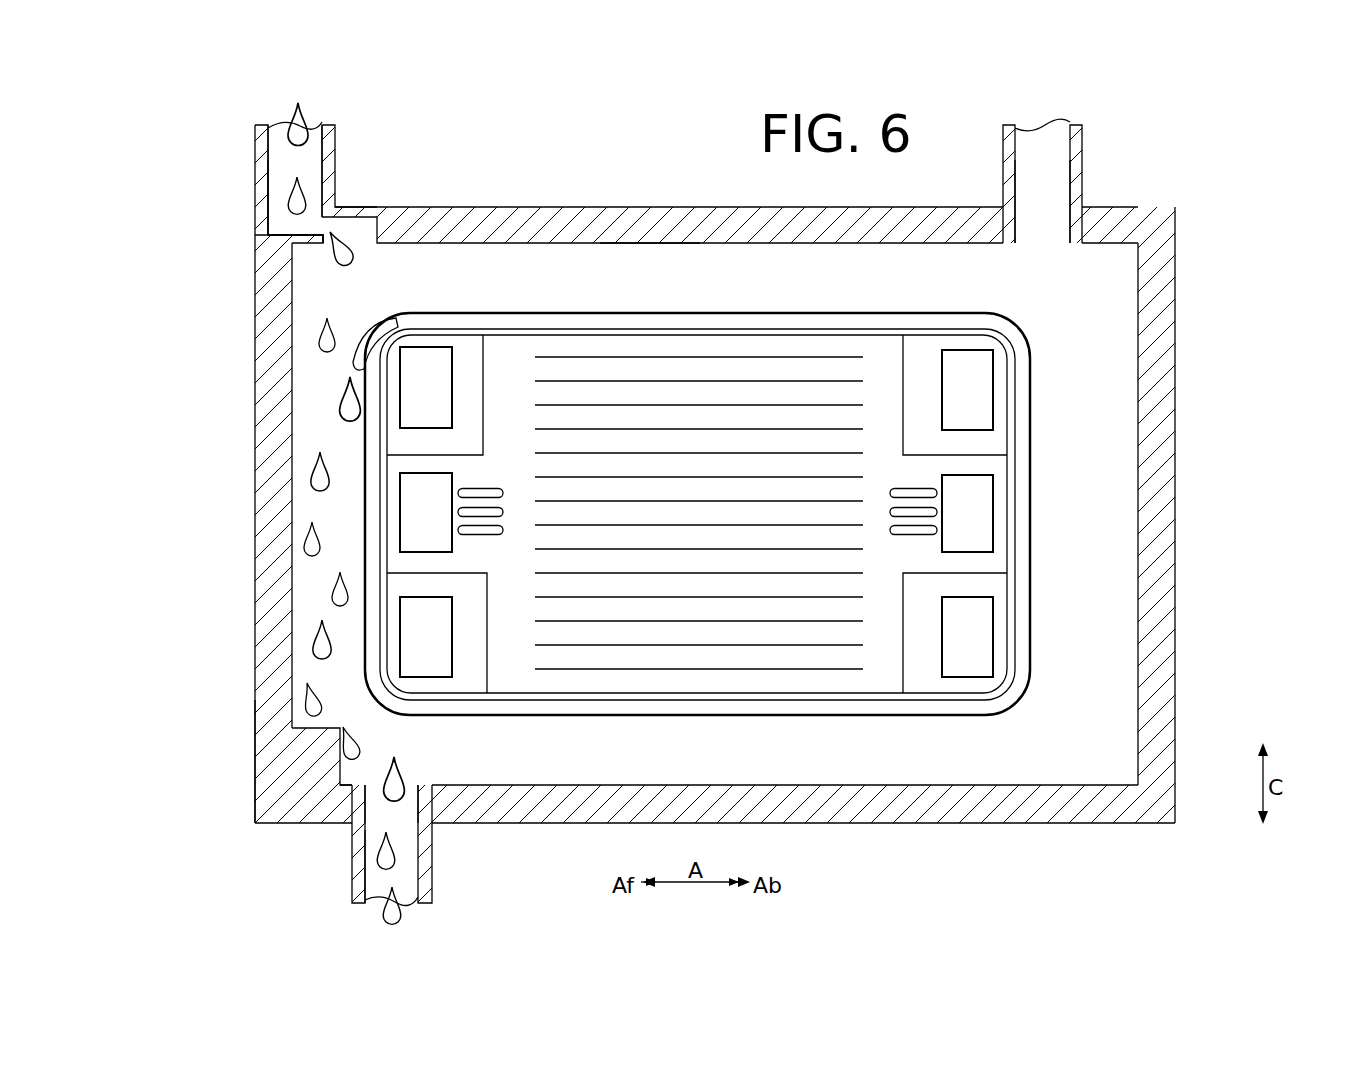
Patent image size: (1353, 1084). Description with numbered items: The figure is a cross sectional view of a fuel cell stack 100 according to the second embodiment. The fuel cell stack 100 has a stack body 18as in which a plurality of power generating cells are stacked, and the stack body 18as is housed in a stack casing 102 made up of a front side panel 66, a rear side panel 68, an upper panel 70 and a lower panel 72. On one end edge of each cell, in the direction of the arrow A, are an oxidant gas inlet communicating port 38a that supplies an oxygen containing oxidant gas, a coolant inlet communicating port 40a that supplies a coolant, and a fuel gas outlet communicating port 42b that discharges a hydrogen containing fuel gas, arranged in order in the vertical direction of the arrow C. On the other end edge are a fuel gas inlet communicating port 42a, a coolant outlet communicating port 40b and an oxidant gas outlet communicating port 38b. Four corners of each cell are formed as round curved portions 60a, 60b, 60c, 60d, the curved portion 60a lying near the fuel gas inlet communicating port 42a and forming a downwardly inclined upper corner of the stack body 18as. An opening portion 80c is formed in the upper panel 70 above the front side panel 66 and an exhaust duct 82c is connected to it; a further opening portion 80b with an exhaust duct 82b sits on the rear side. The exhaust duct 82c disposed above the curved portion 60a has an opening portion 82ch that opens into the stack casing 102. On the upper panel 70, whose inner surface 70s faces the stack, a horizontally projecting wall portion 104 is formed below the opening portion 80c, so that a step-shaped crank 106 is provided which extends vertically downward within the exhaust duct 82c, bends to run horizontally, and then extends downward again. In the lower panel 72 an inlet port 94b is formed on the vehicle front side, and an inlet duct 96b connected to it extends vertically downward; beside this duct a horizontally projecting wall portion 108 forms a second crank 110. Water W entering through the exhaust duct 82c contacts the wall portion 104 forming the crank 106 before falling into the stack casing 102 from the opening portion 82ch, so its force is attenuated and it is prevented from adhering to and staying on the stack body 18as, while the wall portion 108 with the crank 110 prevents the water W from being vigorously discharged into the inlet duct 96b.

The fuel cell stack 100 is at (1290, 146).
The stack body 18as is at (1040, 467).
The oxidant gas inlet communicating port 38a is at (982, 390).
The oxidant gas outlet communicating port 38b is at (415, 640).
The coolant inlet communicating port 40a is at (982, 510).
The coolant outlet communicating port 40b is at (415, 512).
The fuel gas inlet communicating port 42a is at (415, 400).
The fuel gas outlet communicating port 42b is at (982, 640).
The curved portion 60a is at (370, 340).
The curved portion 60b is at (1017, 333).
The curved portion 60c is at (1022, 702).
The curved portion 60d is at (385, 712).
The front side panel 66 is at (262, 372).
The rear side panel 68 is at (1168, 692).
The upper panel 70 is at (682, 212).
The inner surface of top wall 70s is at (613, 244).
The lower panel 72 is at (913, 812).
The opening 80b is at (1068, 222).
The opening portion 80c is at (275, 197).
The pipe 82b is at (1084, 155).
The exhaust duct 82c is at (333, 140).
The opening portion 82ch is at (315, 218).
The inlet port 94b is at (407, 810).
The inlet duct 96b is at (432, 843).
The stack casing 102 is at (207, 202).
The wall portion 104 is at (296, 216).
The crank 106 is at (305, 230).
The wall portion 108 is at (300, 706).
The crank 110 is at (362, 770).
The water W is at (292, 260).